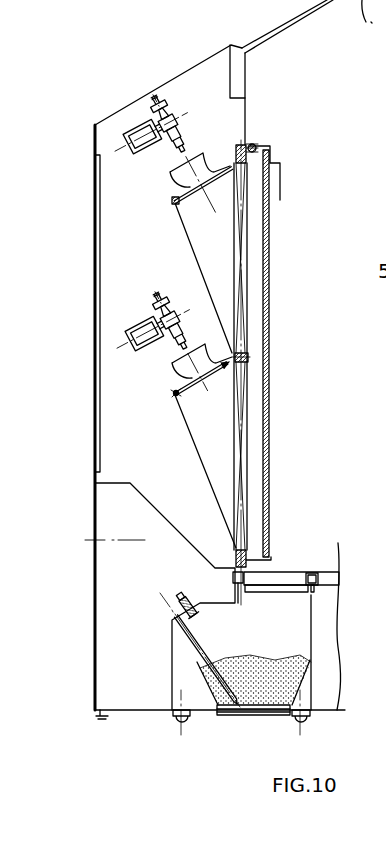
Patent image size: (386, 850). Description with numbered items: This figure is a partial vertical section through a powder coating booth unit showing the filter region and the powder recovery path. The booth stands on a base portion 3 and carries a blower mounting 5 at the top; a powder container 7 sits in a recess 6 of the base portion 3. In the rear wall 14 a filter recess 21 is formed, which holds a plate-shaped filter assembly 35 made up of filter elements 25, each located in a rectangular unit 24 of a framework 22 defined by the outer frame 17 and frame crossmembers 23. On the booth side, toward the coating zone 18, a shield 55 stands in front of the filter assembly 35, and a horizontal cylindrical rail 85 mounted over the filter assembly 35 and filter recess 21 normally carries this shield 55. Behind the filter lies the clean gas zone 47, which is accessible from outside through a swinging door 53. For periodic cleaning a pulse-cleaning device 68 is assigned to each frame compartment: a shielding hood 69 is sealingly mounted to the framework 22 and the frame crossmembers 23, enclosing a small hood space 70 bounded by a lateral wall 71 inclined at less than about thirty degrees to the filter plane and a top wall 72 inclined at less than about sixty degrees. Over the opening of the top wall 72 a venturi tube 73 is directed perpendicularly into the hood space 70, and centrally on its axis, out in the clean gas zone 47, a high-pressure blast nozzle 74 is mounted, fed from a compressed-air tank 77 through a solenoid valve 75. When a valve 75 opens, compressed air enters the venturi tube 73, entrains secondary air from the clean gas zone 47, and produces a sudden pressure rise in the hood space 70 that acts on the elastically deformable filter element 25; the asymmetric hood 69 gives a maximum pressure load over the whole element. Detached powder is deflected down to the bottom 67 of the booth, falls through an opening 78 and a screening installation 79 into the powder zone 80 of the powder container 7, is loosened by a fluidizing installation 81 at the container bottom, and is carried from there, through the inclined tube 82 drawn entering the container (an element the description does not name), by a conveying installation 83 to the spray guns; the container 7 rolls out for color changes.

The base portion 3 is at (319, 713).
The blower mounting 5 is at (91, 124).
The recess 6 is at (139, 705).
The powder container 7 is at (209, 698).
The rear wall 14 is at (247, 126).
The outer frame 17 is at (235, 150).
The coating zone 18 is at (357, 474).
The filter recess 21 is at (234, 556).
The framework 22 is at (240, 143).
The frame crossmembers 23 is at (249, 355).
The rectangular unit 24 is at (249, 362).
The filter element 25 is at (243, 409).
The filter assembly 35 is at (250, 226).
The clean gas zone 47 is at (160, 273).
The swinging door 53 is at (104, 229).
The shield 55 is at (269, 296).
The bottom of the booth 67 is at (322, 575).
The pulse-cleaning device 68 is at (166, 419).
The shielding hood 69 is at (189, 427).
The hood space 70 is at (220, 417).
The lateral wall 71 is at (209, 477).
The top wall 72 is at (175, 392).
The venturi tube 73 is at (198, 368).
The high-pressure blast nozzle 74 is at (179, 334).
The solenoid valve 75 is at (164, 153).
The compressed-air tank 77 is at (132, 132).
The opening 78 is at (283, 576).
The screening installation 79 is at (275, 590).
The powder zone 80 is at (272, 652).
The fluidizing installation 81 is at (261, 712).
The suction tube 82 is at (206, 657).
The conveying installation 83 is at (178, 605).
The horizontal cylindrical track or rail 85 is at (259, 148).